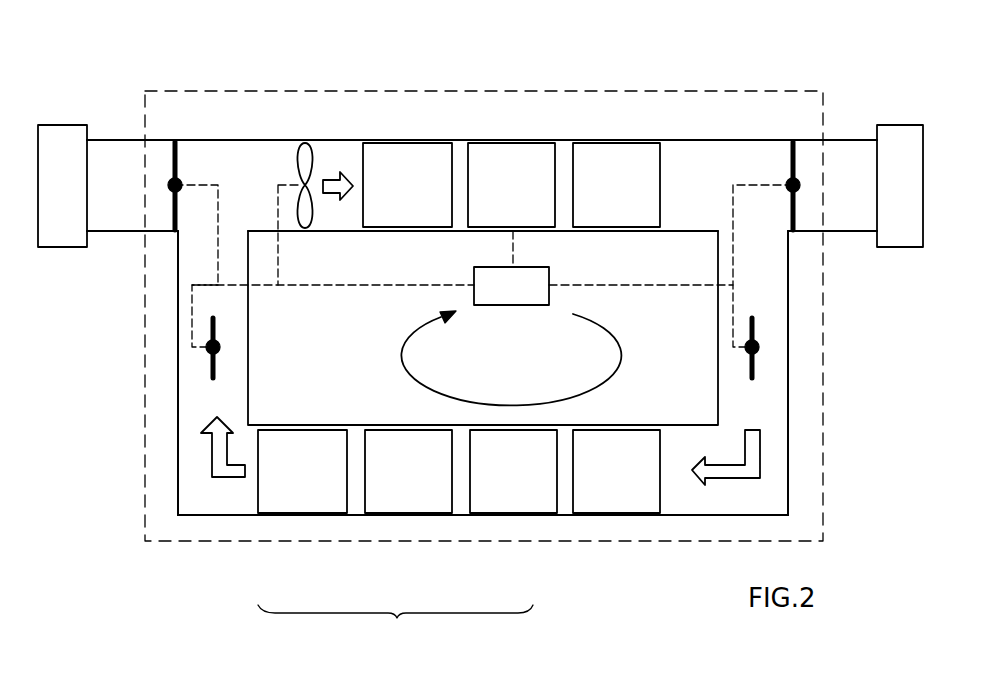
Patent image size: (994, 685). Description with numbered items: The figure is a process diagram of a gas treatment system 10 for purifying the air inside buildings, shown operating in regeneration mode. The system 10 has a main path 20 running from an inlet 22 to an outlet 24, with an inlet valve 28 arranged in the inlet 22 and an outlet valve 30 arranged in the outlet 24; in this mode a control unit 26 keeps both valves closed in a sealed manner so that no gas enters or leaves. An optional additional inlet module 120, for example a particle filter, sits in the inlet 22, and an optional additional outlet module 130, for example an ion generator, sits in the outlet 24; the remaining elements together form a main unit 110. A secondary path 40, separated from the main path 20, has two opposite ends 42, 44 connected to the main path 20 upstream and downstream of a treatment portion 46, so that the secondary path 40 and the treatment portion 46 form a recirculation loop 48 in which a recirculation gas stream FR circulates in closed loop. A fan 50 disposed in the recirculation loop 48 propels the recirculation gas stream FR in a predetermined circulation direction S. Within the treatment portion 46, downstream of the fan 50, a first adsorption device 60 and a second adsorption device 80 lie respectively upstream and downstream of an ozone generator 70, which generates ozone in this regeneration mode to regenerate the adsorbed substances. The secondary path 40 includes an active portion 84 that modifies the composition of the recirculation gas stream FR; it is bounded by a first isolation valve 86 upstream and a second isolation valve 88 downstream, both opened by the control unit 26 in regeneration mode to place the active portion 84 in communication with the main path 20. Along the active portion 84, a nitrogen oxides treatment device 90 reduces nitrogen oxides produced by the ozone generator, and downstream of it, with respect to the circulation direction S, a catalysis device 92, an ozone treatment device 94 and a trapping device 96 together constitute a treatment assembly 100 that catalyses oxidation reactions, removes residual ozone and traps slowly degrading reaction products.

The gas treatment system 10 is at (98, 389).
The main path 20 is at (260, 150).
The inlet 22 is at (158, 235).
The outlet 24 is at (808, 222).
The control unit 26 is at (520, 297).
The inlet valve 28 is at (178, 152).
The outlet valve 30 is at (789, 155).
The secondary path 40 is at (483, 328).
The end of the secondary path 42 is at (200, 248).
The end of the secondary path 44 is at (770, 253).
The treatment portion 46 is at (340, 217).
The recirculation loop 48 is at (201, 497).
The fan 50 is at (315, 152).
The first adsorption device 60 is at (398, 150).
The ozone generator 70 is at (508, 150).
The second adsorption device 80 is at (607, 150).
The active portion 84 is at (353, 440).
The first isolation valve 86 is at (743, 365).
The second isolation valve 88 is at (218, 332).
The nitrogen oxides treatment device 90 is at (623, 498).
The catalysis device 92 is at (522, 498).
The ozone treatment device 94 is at (412, 498).
The trapping device 96 is at (305, 498).
The treatment assembly 100 is at (395, 627).
The main unit 110 is at (836, 473).
The additional inlet module 120 is at (59, 124).
The additional outlet module 130 is at (897, 124).
The predetermined circulation direction S is at (622, 340).
The recirculation gas stream FR is at (343, 172).